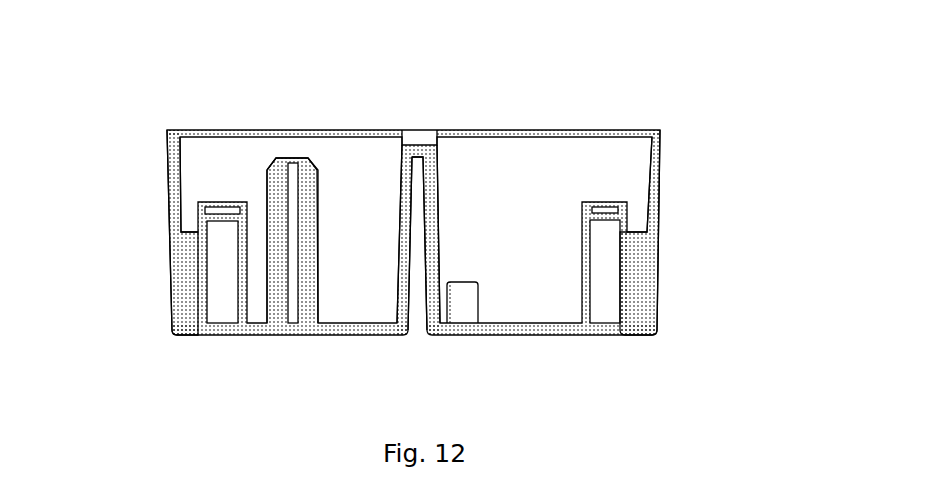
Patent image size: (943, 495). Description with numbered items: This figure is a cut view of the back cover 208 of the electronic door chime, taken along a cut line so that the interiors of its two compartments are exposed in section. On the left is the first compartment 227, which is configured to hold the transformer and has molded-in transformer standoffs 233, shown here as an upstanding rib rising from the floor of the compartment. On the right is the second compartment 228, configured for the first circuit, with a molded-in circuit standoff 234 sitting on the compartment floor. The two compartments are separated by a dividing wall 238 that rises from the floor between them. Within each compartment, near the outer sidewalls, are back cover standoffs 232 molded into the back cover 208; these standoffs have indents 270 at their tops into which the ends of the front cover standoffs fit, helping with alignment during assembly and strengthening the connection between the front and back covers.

The back cover 208 is at (724, 106).
The first compartment 227 is at (217, 163).
The second compartment 228 is at (572, 173).
The back cover standoffs 232 is at (195, 258).
The transformer standoffs 233 is at (307, 175).
The circuit standoffs 234 is at (465, 297).
The divider wall 238 is at (418, 282).
The indents 270 is at (605, 208).